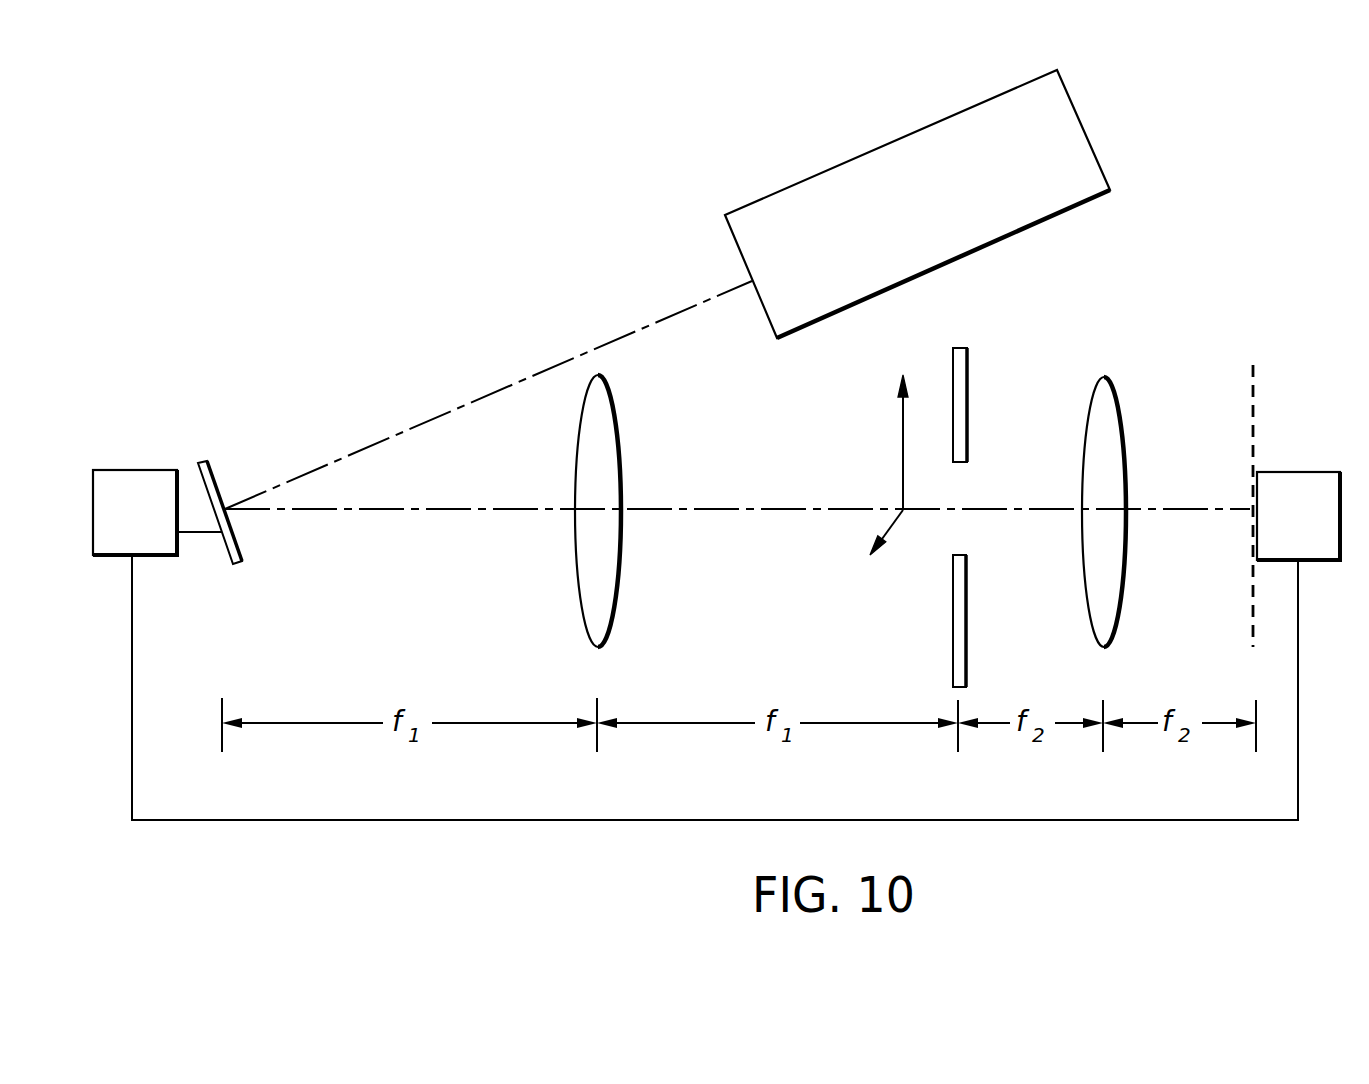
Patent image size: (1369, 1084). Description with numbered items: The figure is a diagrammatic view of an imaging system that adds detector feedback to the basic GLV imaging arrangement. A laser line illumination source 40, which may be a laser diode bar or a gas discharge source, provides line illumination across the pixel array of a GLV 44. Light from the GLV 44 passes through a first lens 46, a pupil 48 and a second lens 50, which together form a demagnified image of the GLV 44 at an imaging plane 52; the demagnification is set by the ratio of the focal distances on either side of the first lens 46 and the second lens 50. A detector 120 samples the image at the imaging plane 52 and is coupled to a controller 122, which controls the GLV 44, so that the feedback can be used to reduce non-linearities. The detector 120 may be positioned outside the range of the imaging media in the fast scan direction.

The laser line illumination source 40 is at (857, 156).
The GLV 44 is at (217, 473).
The first lens 46 is at (617, 420).
The pupil 48 is at (968, 372).
The second lens 50 is at (1118, 398).
The imaging plane 52 is at (1258, 376).
The detector 120 is at (1322, 472).
The controller 122 is at (130, 470).